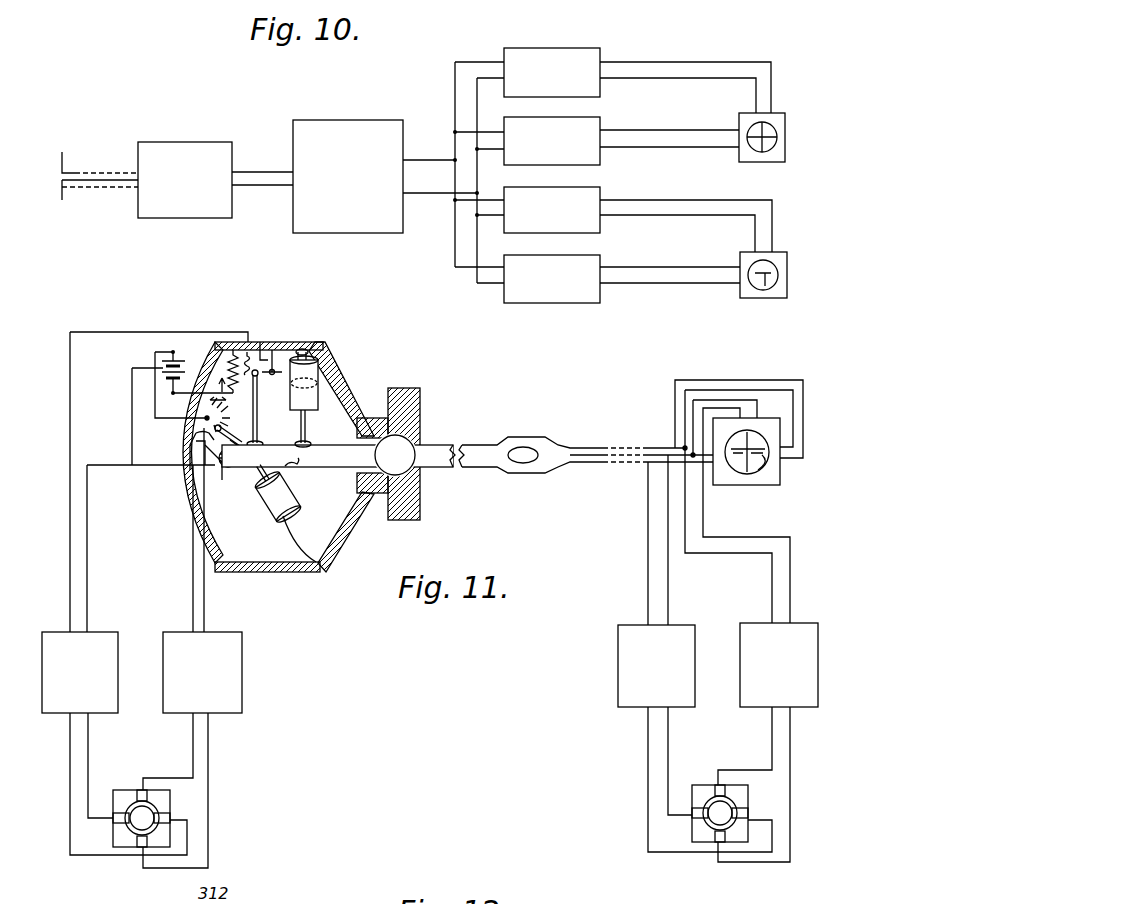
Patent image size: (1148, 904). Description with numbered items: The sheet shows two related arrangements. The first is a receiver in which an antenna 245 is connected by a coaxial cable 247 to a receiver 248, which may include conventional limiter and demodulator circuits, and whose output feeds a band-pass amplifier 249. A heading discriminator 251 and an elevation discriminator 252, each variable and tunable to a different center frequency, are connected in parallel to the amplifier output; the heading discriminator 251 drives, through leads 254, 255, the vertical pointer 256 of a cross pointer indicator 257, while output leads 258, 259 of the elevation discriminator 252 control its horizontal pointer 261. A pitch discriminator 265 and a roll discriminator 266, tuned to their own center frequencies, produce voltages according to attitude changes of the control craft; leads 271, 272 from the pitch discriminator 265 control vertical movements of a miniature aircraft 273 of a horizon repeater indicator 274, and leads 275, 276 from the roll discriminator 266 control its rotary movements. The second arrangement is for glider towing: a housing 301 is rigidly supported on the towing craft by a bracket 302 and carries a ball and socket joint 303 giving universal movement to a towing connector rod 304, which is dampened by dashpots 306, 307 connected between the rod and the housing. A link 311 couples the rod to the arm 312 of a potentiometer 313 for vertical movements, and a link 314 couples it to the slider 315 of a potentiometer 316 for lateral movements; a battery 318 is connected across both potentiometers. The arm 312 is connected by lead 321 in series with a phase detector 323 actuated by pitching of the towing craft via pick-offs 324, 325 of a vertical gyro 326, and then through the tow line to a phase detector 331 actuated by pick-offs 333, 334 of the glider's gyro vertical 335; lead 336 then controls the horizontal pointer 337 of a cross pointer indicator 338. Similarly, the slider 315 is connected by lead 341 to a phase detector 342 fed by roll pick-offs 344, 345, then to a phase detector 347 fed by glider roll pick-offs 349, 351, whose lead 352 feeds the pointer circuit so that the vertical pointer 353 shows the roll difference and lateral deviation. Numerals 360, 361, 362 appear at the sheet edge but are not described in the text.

In FIG. 10, the antenna 245 is at (70, 168).
In FIG. 10, the coaxial cable 247 is at (103, 181).
In FIG. 10, the receiver 248 is at (208, 136).
In FIG. 10, the band-pass amplifier 249 is at (340, 123).
In FIG. 10, the heading discriminator 251 is at (530, 100).
In FIG. 10, the elevation discriminator 252 is at (545, 108).
In FIG. 10, the lead 254 is at (680, 62).
In FIG. 10, the lead 255 is at (656, 80).
In FIG. 10, the vertical pointer 256 is at (758, 130).
In FIG. 10, the cross pointer indicator 257 is at (785, 120).
In FIG. 10, the output lead 258 is at (651, 128).
In FIG. 10, the output lead 259 is at (653, 146).
In FIG. 10, the horizontal pointer 261 is at (762, 150).
In FIG. 10, the pitch discriminator 265 is at (590, 222).
In FIG. 10, the roll discriminator 266 is at (588, 296).
In FIG. 10, the lead 271 is at (690, 218).
In FIG. 10, the lead 272 is at (703, 200).
In FIG. 10, the miniature aircraft 273 is at (765, 290).
In FIG. 10, the horizon repeater indicator 274 is at (780, 252).
In FIG. 10, the lead 275 is at (680, 286).
In FIG. 10, the lead 276 is at (690, 256).
In FIG. 11, the housing 301 is at (333, 395).
In FIG. 11, the bracket 302 is at (412, 395).
In FIG. 11, the ball and socket joint 303 is at (415, 432).
In FIG. 11, the towing connector rod 304 is at (448, 472).
In FIG. 11, the dashpot 306 is at (318, 385).
In FIG. 11, the dashpot 307 is at (264, 498).
In FIG. 11, the link 311 is at (243, 446).
In FIG. 11, the arm 312 is at (263, 357).
In FIG. 11, the potentiometer 313 is at (232, 352).
In FIG. 11, the link 314 is at (225, 428).
In FIG. 11, the slider 315 is at (203, 420).
In FIG. 11, the potentiometer 316 is at (230, 403).
In FIG. 11, the battery 318 is at (185, 360).
In FIG. 11, the lead 321 is at (70, 540).
In FIG. 11, the phase detector 323 is at (108, 634).
In FIG. 11, the pick-off 324 is at (113, 822).
In FIG. 11, the pick-off 325 is at (170, 816).
In FIG. 11, the vertical gyro 326 is at (165, 795).
In FIG. 11, the phase detector 331 is at (618, 637).
In FIG. 11, the pick-off 333 is at (692, 813).
In FIG. 11, the pick-off 334 is at (745, 812).
In FIG. 11, the gyro vertical 335 is at (694, 792).
In FIG. 11, the lead 336 is at (670, 575).
In FIG. 11, the horizontal pointer 337 is at (775, 462).
In FIG. 11, the cross pointer indicator 338 is at (730, 418).
In FIG. 11, the lead 341 is at (192, 570).
In FIG. 11, the phase detector 342 is at (243, 648).
In FIG. 11, the pick-off 344 is at (140, 788).
In FIG. 11, the pick-off 345 is at (142, 850).
In FIG. 11, the phase detector 347 is at (750, 623).
In FIG. 11, the pick-off 349 is at (712, 785).
In FIG. 11, the pick-off 351 is at (718, 845).
In FIG. 11, the lead 352 is at (790, 540).
In FIG. 11, the vertical pointer 353 is at (750, 440).
In FIG. 11, the lead 360 is at (790, 903).
In FIG. 11, the lead 361 is at (94, 903).
In FIG. 11, the lead 362 is at (748, 898).